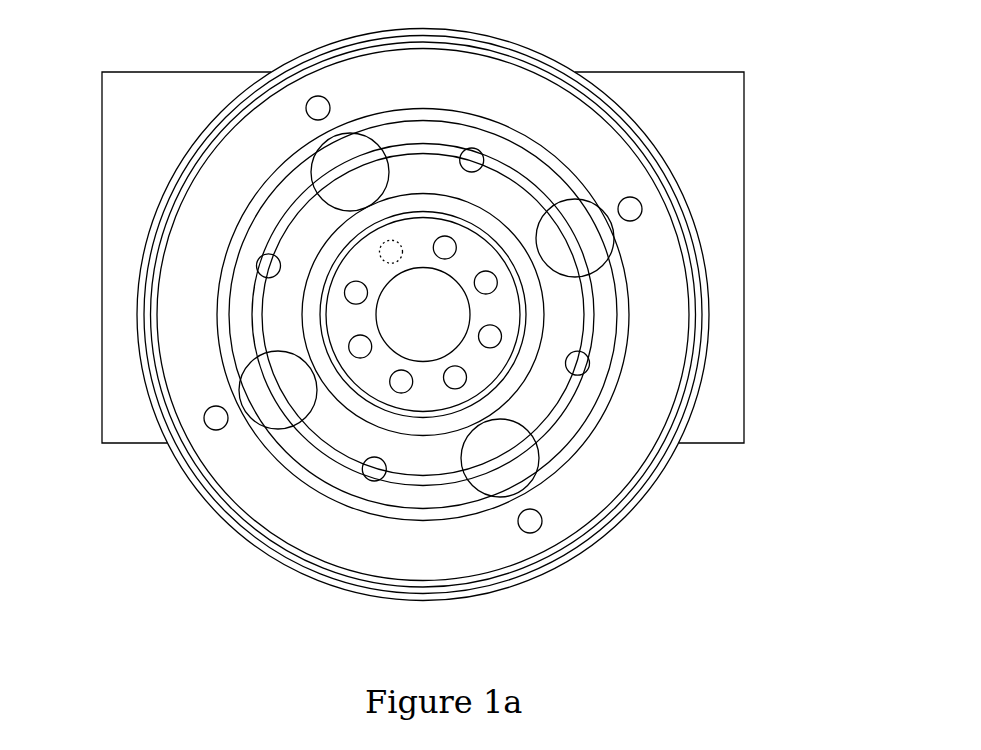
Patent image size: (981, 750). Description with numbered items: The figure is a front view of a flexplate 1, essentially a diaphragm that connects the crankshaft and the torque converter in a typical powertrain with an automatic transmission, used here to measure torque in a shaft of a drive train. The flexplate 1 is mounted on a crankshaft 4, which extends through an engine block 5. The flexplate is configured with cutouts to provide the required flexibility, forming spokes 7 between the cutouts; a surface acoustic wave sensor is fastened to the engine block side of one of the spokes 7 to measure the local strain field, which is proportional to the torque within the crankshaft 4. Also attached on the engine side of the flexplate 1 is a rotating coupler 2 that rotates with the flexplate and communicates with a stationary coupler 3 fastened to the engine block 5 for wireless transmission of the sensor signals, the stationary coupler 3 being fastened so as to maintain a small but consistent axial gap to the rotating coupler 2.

The flexplate 1 is at (278, 537).
The rotating coupler 2 is at (561, 222).
The stationary coupler 3 is at (340, 165).
The crankshaft 4 is at (395, 324).
The engine block 5 is at (706, 435).
The spokes 7 is at (424, 172).